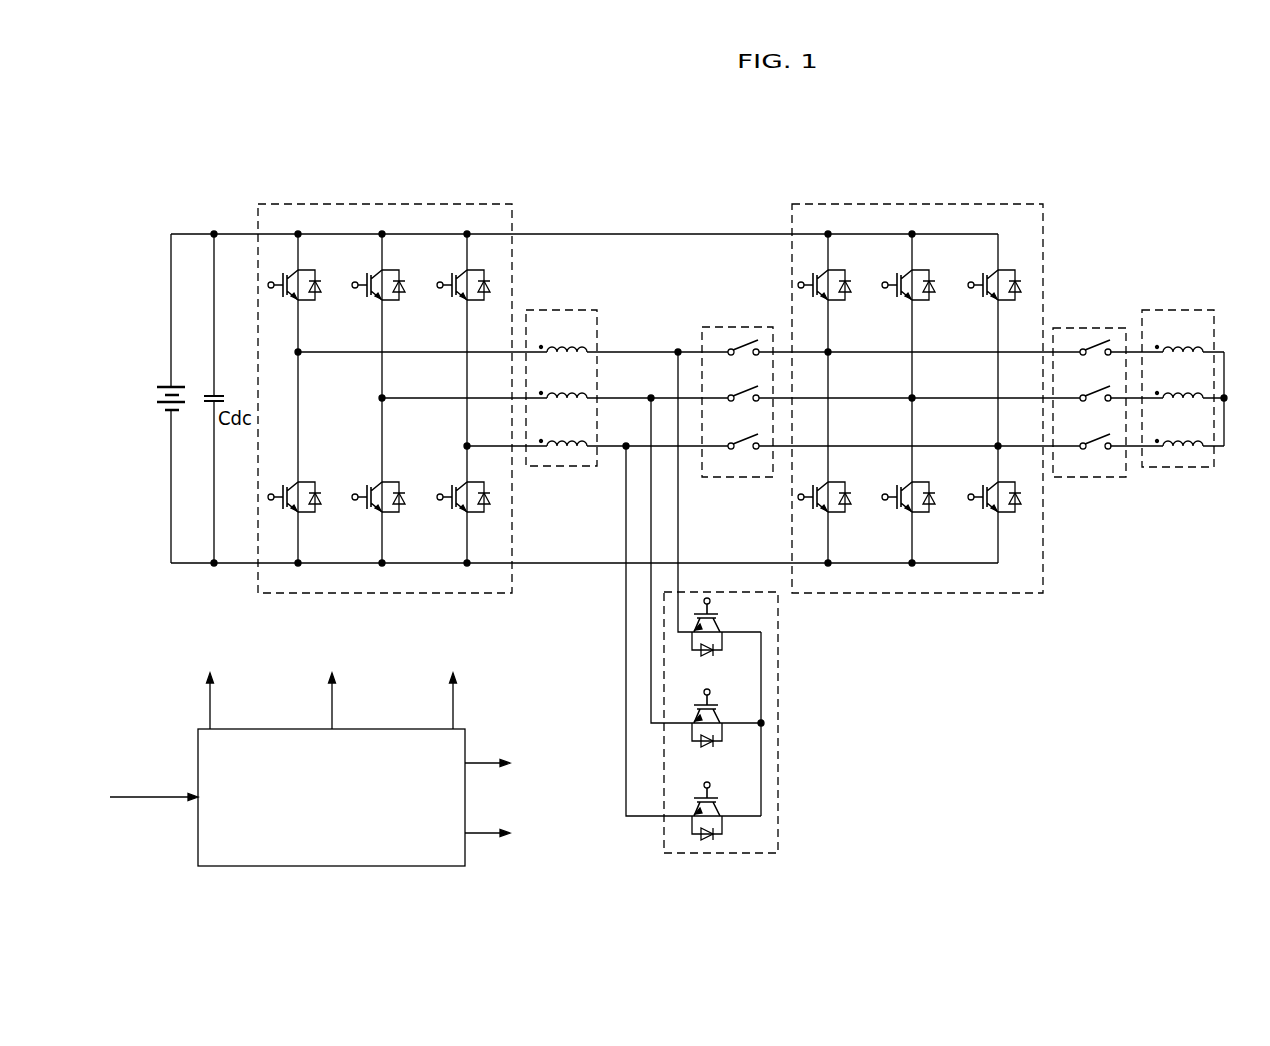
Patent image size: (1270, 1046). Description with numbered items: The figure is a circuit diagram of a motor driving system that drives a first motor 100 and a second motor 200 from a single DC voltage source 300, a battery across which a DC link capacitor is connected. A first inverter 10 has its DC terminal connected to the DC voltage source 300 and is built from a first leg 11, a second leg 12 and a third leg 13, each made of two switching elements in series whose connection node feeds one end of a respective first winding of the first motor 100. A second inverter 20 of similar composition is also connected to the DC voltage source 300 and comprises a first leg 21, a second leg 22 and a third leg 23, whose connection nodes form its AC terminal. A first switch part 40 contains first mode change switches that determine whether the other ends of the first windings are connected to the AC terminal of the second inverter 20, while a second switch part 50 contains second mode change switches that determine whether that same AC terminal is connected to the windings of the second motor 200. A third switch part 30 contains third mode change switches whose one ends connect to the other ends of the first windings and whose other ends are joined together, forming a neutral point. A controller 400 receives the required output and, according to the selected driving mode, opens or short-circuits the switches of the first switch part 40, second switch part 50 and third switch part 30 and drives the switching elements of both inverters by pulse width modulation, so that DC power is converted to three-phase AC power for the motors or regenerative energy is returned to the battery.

The first inverter 10 is at (382, 364).
The first leg 11 is at (298, 214).
The second leg 12 is at (382, 214).
The third leg 13 is at (467, 214).
The second inverter 20 is at (911, 365).
The first leg 21 is at (828, 214).
The second leg 22 is at (912, 214).
The third leg 23 is at (998, 214).
The third switch part 30 is at (778, 764).
The first switch part 40 is at (740, 327).
The second switch part 50 is at (1093, 328).
The first motor 100 is at (579, 466).
The second motor 200 is at (1193, 467).
The DC voltage source 300 is at (162, 387).
The controller 400 is at (465, 734).